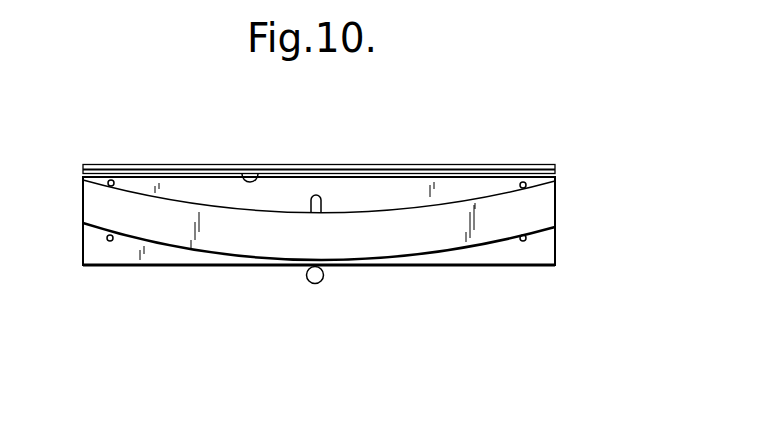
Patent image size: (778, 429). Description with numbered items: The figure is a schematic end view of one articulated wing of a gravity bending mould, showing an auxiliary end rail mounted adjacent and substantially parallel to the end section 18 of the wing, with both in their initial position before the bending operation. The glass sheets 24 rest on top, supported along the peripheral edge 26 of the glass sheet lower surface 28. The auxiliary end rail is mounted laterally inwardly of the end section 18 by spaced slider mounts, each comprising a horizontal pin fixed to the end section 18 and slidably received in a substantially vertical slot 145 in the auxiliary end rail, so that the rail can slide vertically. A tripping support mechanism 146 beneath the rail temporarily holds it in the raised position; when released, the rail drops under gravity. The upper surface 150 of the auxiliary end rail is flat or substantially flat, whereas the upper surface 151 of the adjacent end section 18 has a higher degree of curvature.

The end section 18 is at (538, 218).
The glass sheet 24 is at (157, 168).
The peripheral edge 26 is at (243, 176).
The glass sheet lower surface 28 is at (547, 178).
The vertical slot 145 is at (111, 180).
The tripping support mechanism 146 is at (308, 284).
The upper surface of the auxiliary end rail 150 is at (397, 180).
The upper surface of the end section 151 is at (443, 202).